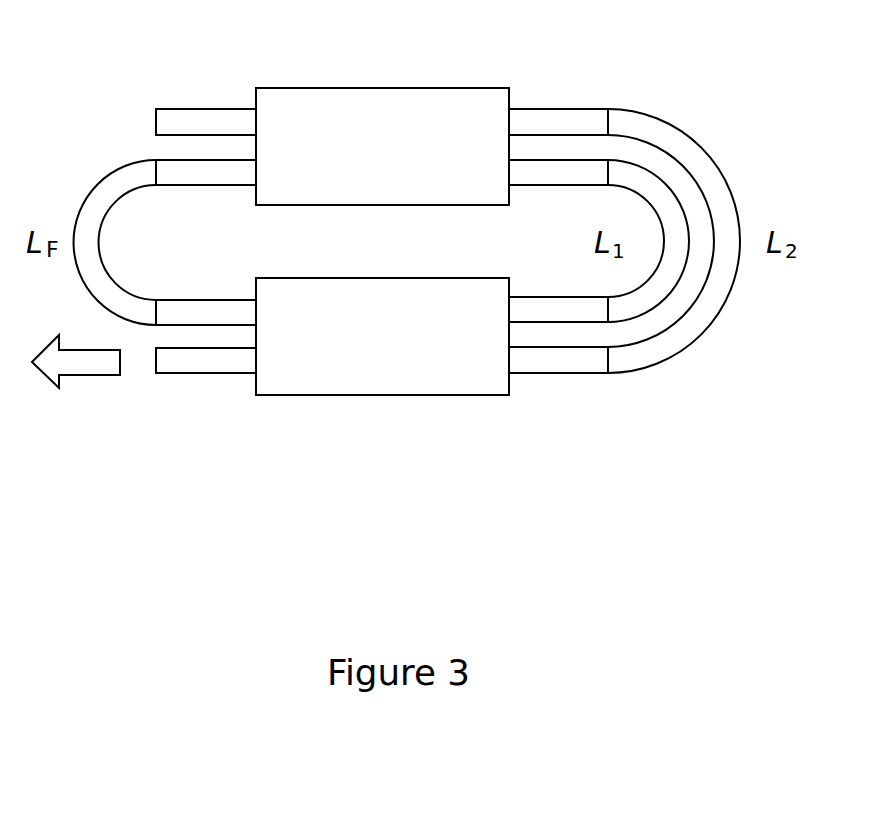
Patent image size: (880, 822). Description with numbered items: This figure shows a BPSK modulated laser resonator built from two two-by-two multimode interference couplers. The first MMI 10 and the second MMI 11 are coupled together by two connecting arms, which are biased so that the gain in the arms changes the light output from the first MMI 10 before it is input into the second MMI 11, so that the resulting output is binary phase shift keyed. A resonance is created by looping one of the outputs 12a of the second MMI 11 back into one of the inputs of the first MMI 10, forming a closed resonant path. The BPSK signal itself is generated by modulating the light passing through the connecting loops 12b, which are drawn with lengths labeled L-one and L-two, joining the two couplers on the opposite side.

The first 2×2 MMI 10 is at (371, 88).
The second 2×2 MMI 11 is at (366, 278).
The output of the second MMI 12a is at (96, 190).
The connecting loops 12b is at (662, 197).